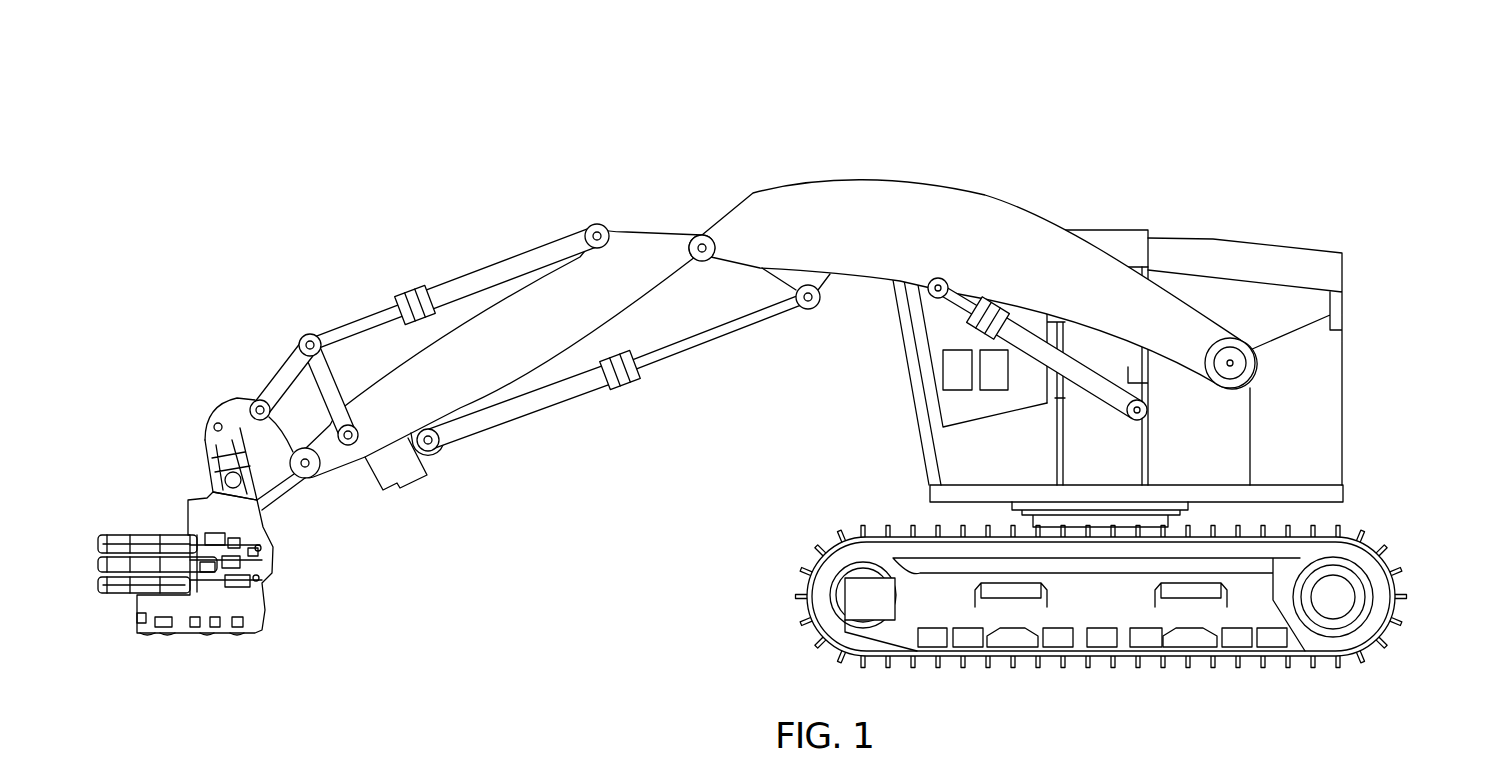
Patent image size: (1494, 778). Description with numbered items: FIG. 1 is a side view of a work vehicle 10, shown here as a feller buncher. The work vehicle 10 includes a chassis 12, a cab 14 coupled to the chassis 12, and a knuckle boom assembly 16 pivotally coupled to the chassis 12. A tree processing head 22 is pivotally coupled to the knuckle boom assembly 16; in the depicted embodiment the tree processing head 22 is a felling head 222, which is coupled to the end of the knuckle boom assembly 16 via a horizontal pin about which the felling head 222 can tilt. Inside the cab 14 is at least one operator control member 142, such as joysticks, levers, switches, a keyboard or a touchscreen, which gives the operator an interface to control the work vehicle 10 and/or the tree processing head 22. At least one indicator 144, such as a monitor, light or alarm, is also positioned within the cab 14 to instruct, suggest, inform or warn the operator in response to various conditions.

The work vehicle 10 is at (1079, 291).
The chassis 12 is at (1384, 523).
The cab 14 is at (912, 382).
The operator control member 142 is at (952, 367).
The indicator 144 is at (992, 378).
The knuckle boom assembly 16 is at (650, 157).
The tree processing head 22 is at (201, 470).
The felling head 222 is at (181, 437).